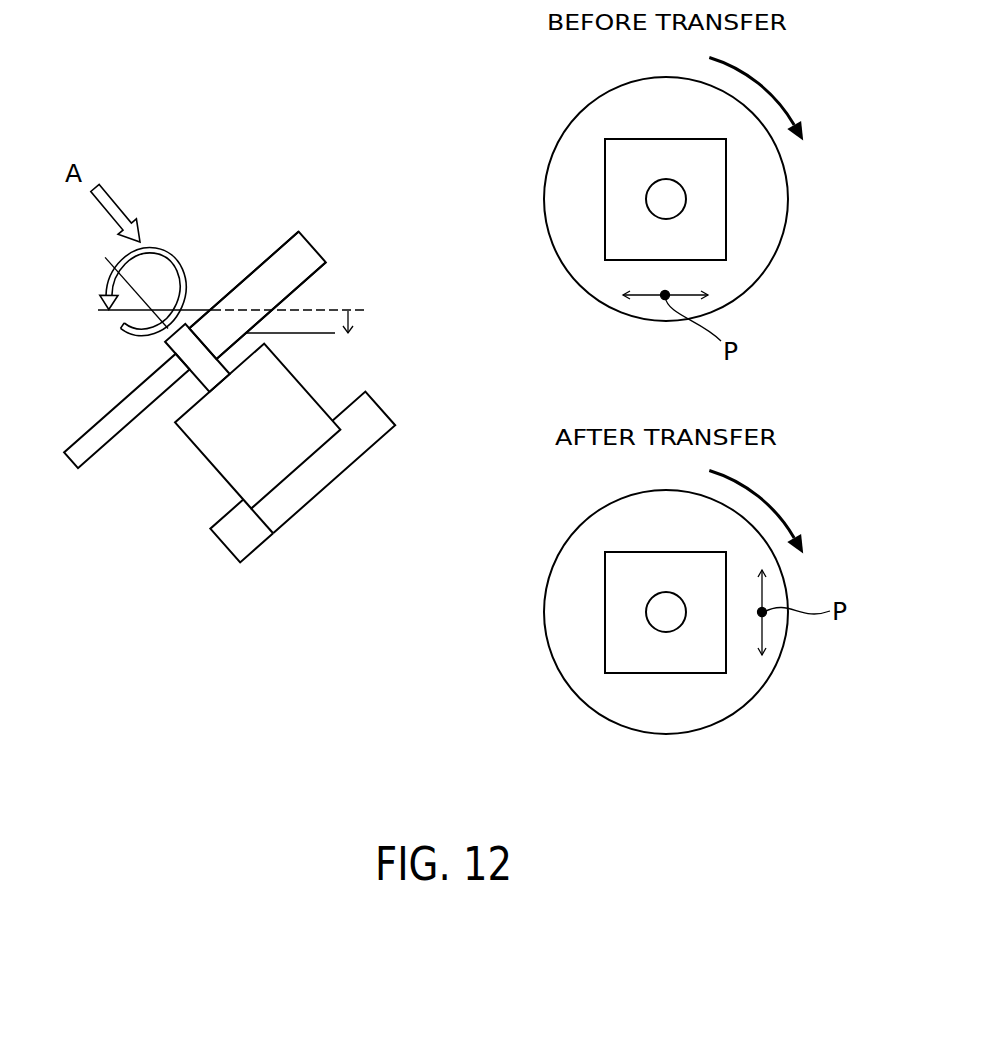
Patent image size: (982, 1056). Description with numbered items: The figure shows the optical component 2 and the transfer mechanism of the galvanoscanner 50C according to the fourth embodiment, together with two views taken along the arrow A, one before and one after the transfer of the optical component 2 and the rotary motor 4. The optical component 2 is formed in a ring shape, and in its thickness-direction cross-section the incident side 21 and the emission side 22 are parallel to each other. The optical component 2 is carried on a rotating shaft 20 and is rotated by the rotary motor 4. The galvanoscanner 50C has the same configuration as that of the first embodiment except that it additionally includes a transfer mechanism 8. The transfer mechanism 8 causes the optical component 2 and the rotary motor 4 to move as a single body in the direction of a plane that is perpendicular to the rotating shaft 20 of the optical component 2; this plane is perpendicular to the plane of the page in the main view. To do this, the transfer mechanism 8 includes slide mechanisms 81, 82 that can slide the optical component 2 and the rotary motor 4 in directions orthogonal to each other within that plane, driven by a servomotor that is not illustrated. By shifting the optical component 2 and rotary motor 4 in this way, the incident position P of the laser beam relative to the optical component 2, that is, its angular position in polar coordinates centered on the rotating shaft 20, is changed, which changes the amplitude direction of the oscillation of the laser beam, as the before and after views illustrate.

The galvanoscanner 50C is at (324, 72).
The optical component 2 is at (312, 245).
The incident side 21 is at (267, 257).
The emission side 22 is at (303, 287).
The rotating shaft 20 is at (187, 357).
The rotary motor 4 is at (225, 463).
The transfer mechanism 8 is at (321, 501).
The slide mechanism 81 is at (252, 542).
The slide mechanism 82 is at (335, 463).